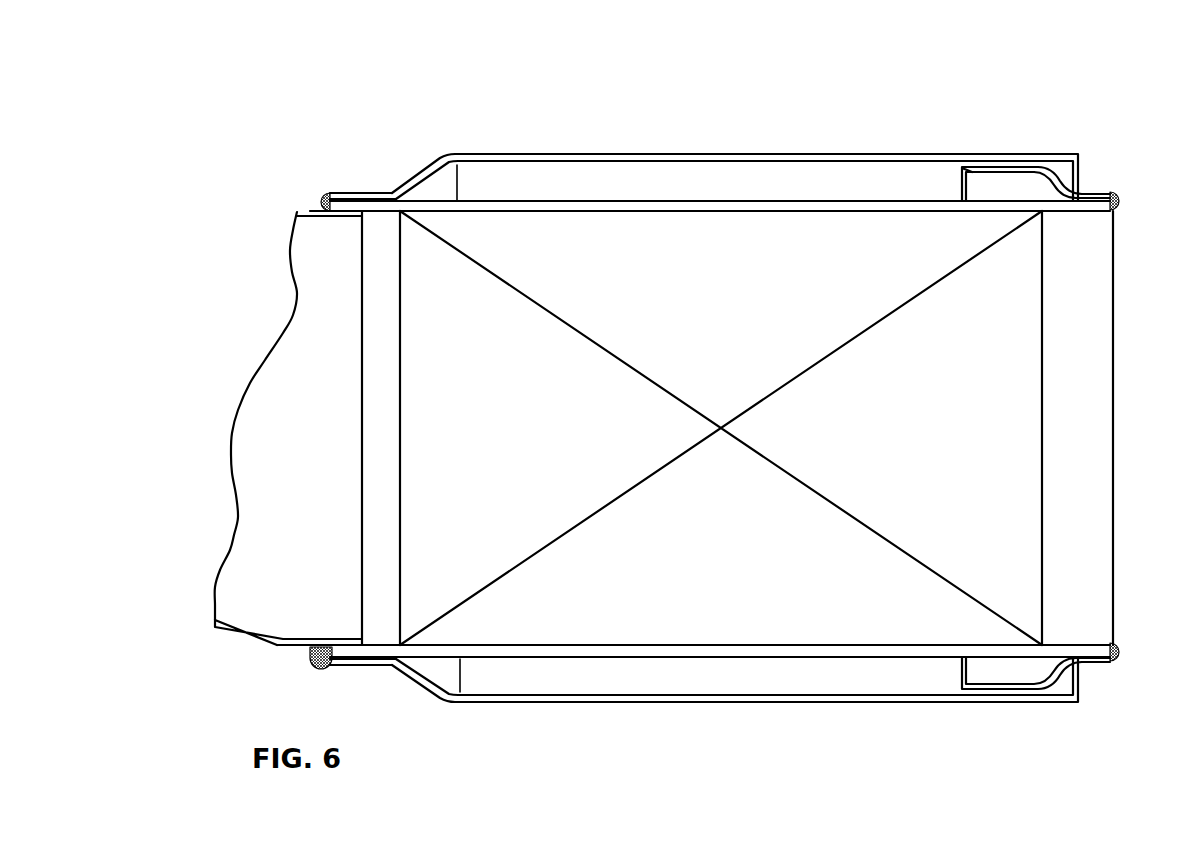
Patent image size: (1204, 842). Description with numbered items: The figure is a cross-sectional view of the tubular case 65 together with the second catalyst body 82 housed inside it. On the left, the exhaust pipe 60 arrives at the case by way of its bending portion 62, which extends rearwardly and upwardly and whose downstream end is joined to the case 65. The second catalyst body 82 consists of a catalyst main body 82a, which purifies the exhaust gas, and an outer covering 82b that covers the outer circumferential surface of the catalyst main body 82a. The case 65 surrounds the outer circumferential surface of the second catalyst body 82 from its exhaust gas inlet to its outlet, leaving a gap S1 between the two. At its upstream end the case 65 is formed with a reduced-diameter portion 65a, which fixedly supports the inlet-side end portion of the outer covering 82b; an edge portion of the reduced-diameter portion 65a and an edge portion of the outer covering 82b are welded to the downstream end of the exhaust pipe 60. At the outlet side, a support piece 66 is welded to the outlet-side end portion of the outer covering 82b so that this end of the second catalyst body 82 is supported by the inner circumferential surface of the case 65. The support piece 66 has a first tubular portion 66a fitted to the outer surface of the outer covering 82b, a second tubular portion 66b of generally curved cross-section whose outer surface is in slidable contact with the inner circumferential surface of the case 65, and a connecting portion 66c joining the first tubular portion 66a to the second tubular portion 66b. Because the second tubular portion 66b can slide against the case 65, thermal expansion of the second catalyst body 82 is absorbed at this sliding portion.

The exhaust pipe 60 is at (296, 292).
The bending portion 62 is at (268, 433).
The case 65 is at (932, 153).
The reduced-diameter portion 65a is at (366, 193).
The support piece 66 is at (1033, 163).
The first tubular portion 66a is at (1095, 193).
The second tubular portion 66b is at (1015, 167).
The connecting portion 66c is at (1063, 172).
The second catalyst body 82 is at (508, 197).
The catalyst main body 82a is at (604, 248).
The outer covering 82b is at (689, 208).
The gap S1 is at (790, 178).